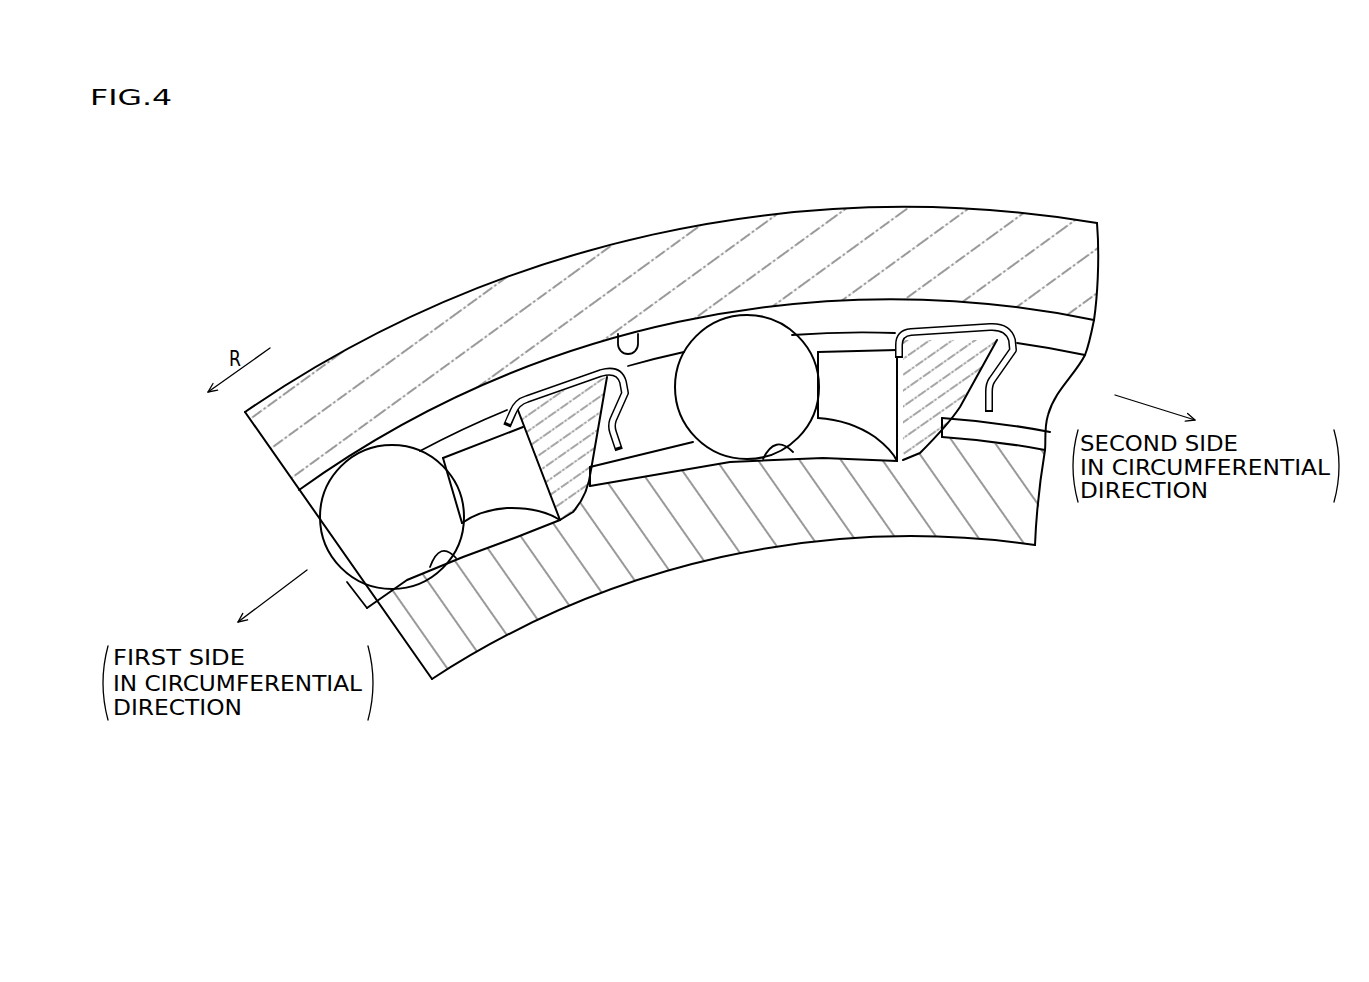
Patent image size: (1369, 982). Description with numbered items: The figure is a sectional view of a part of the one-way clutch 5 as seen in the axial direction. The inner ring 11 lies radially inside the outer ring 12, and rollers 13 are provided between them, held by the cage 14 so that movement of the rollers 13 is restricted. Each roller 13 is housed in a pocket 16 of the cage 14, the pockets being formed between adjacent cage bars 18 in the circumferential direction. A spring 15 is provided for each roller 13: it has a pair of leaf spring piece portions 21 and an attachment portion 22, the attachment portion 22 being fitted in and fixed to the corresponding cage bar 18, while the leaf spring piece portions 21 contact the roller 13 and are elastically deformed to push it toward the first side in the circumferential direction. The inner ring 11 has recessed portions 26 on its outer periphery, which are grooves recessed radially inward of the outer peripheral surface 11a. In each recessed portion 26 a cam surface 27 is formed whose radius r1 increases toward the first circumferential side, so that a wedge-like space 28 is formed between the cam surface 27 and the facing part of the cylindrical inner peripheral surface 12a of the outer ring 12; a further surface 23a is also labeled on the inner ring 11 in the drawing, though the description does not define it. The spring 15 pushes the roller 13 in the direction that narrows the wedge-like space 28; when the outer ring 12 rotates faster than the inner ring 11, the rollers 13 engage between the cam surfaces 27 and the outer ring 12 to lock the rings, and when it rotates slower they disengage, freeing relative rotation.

The one-way clutch 5 is at (983, 320).
The inner ring 11 is at (698, 515).
The outer peripheral surface 11a is at (628, 462).
The outer ring 12 is at (467, 327).
The inner peripheral surface 12a is at (617, 335).
The roller 13 is at (360, 473).
The cage 14 is at (482, 413).
The spring 15 is at (468, 443).
The pocket 16 is at (663, 378).
The cage bar 18 is at (568, 445).
The leaf spring piece portion 21 is at (463, 463).
The attachment portion 22 is at (514, 403).
The cam surface 23a is at (608, 580).
The recessed portion 26 is at (487, 548).
The cam surface 27 is at (455, 560).
The wedge-like space 28 is at (462, 552).
The radius r1 is at (705, 466).